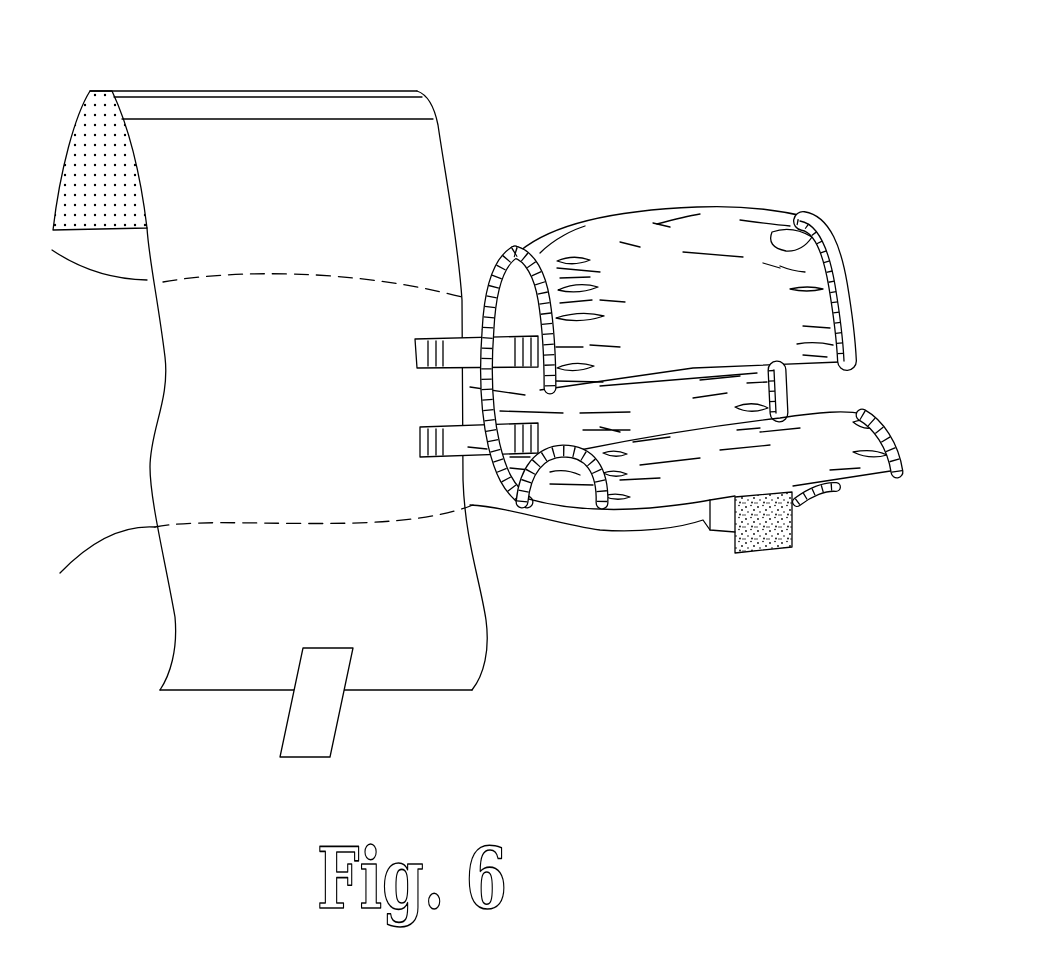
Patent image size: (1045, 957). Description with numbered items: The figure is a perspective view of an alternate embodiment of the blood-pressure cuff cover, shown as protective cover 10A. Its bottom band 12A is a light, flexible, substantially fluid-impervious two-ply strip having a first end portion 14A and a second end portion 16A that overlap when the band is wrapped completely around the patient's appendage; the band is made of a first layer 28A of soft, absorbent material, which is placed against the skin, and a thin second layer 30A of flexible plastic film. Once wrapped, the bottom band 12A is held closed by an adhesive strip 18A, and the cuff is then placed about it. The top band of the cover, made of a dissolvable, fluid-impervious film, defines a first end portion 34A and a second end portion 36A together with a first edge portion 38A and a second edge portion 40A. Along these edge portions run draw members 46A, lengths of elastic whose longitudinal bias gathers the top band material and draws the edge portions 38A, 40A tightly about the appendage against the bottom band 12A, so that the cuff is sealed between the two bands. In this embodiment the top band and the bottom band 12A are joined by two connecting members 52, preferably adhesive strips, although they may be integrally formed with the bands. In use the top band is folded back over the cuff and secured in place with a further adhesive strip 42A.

The protective cover 10A is at (705, 374).
The bottom band 12A is at (342, 215).
The first end portion 14A is at (487, 650).
The second end portion 16A is at (102, 230).
The adhesive strip 18A is at (320, 728).
The first layer 28A is at (103, 155).
The second layer 30A is at (333, 108).
The first end portion 34A is at (683, 482).
The second end portion 36A is at (807, 355).
The first edge portion 38A is at (528, 263).
The second edge portion 40A is at (847, 267).
The adhesive strip 42A is at (780, 540).
The draw members 46A is at (897, 437).
The connecting members 52 is at (458, 347).